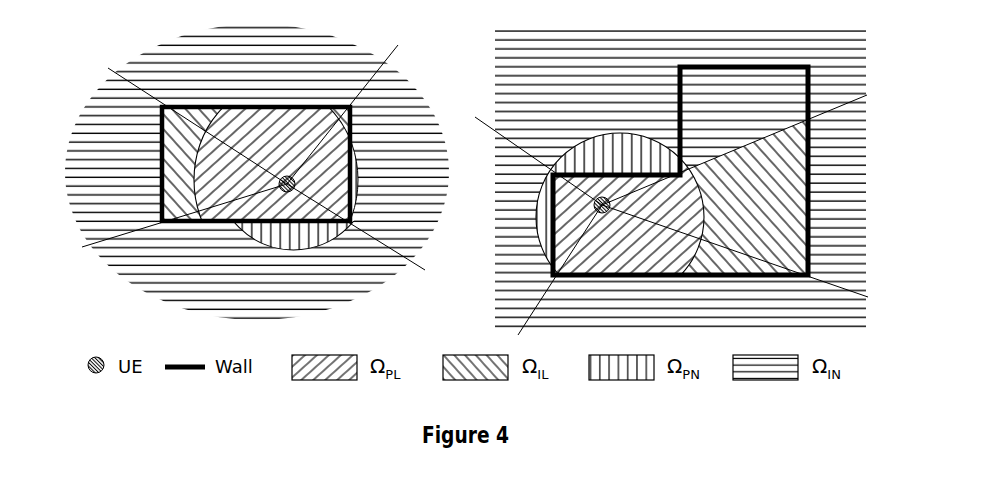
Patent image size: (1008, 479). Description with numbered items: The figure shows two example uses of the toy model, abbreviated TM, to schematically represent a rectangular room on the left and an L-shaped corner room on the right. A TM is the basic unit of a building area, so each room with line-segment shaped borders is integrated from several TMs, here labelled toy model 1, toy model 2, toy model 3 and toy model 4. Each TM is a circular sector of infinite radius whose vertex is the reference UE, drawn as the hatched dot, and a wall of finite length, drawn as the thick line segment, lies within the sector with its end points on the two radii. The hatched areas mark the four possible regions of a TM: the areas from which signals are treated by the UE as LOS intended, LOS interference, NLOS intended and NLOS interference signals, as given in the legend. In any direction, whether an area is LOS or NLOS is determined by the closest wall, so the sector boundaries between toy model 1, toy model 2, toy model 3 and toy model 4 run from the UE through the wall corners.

The toy model 1 is at (445, 87).
The toy model 2 is at (317, 213).
The toy model 3 is at (430, 281).
The toy model 4 is at (578, 163).